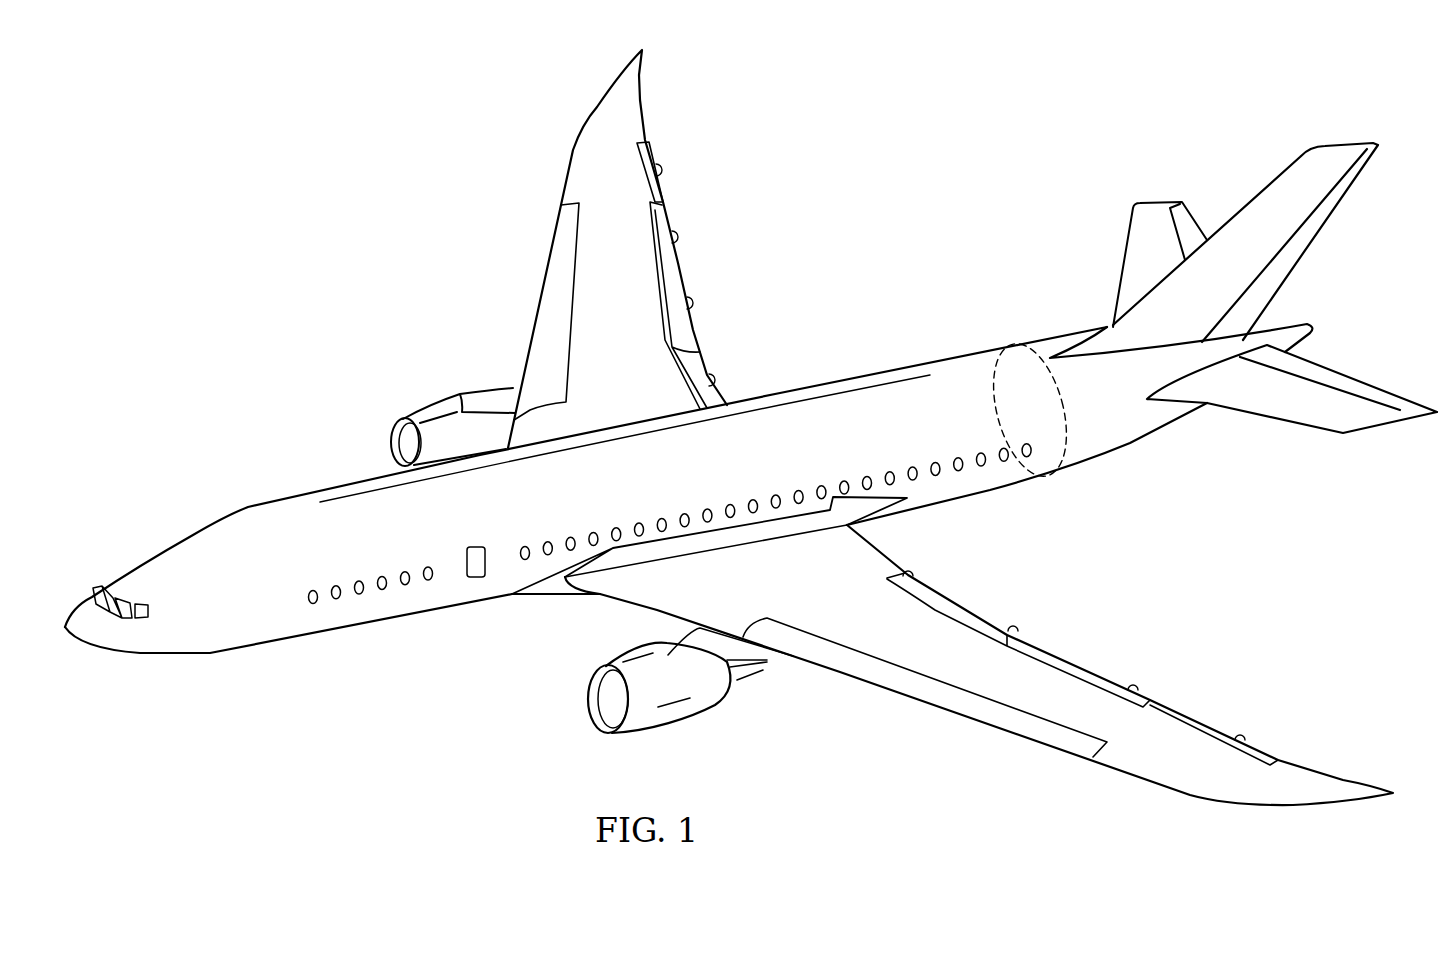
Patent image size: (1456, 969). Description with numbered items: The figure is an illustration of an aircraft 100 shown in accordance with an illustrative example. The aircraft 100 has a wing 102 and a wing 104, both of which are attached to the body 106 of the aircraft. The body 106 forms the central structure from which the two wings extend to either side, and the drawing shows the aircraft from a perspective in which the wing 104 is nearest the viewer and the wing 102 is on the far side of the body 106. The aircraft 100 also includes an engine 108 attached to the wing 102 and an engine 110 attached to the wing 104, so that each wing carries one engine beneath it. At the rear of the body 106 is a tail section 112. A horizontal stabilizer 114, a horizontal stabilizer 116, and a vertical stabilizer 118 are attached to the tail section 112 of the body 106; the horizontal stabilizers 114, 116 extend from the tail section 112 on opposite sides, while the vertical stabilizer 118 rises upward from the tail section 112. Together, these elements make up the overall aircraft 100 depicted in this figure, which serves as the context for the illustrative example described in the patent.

The aircraft 100 is at (339, 201).
The wing 102 is at (641, 88).
The wing 104 is at (1236, 805).
The body 106 is at (247, 507).
The engine 108 is at (425, 405).
The engine 110 is at (677, 728).
The tail section 112 is at (1187, 472).
The horizontal stabilizer 114 is at (1123, 260).
The horizontal stabilizer 116 is at (1293, 423).
The vertical stabilizer 118 is at (1323, 230).